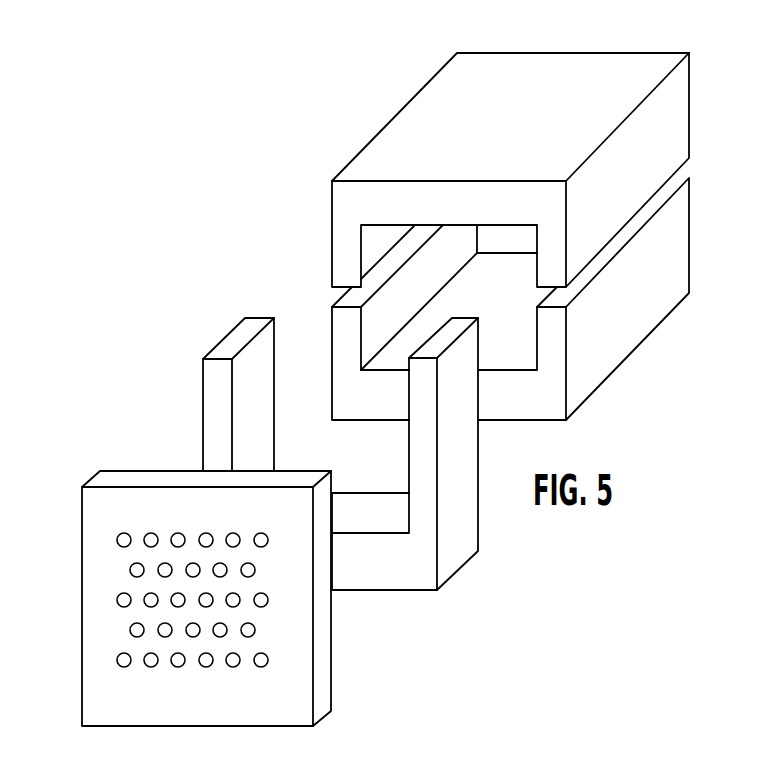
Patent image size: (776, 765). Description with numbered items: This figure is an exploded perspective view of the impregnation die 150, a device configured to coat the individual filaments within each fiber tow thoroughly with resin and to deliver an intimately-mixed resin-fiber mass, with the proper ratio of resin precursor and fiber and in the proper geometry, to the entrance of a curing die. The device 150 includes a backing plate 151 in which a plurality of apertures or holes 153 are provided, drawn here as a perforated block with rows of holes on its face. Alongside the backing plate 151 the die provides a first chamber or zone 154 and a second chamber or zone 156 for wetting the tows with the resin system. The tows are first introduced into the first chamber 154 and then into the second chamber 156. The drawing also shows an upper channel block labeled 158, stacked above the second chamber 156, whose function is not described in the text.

The impregnation die 150 is at (228, 231).
The backing plate 151 is at (118, 487).
The holes 153 is at (117, 542).
The first chamber 154 is at (390, 577).
The second chamber 156 is at (630, 340).
The upper channel block 158 is at (678, 94).